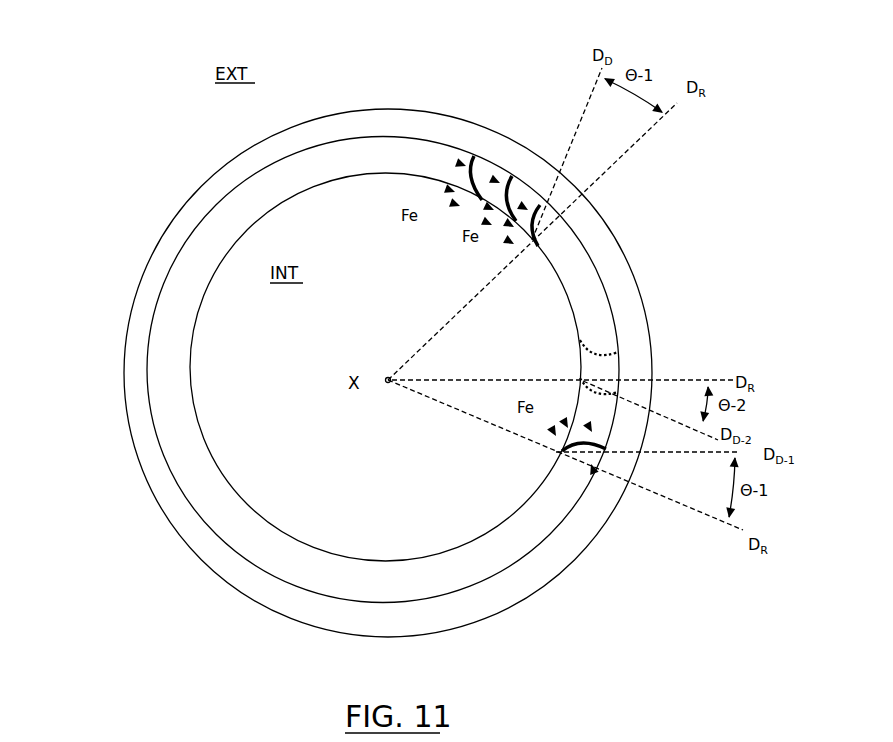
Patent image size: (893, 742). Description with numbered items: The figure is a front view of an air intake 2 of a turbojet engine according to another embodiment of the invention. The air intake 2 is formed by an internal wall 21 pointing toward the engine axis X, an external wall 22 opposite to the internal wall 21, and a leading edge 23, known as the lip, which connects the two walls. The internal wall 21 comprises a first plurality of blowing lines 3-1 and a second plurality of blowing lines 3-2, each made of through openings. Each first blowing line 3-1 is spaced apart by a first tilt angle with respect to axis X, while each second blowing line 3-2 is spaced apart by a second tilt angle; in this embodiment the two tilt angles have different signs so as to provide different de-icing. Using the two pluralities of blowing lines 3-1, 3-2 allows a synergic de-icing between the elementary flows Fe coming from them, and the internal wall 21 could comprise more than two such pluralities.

The air intake 2 is at (363, 373).
The internal wall 21 is at (193, 390).
The external wall 22 is at (128, 334).
The leading edge 23 is at (160, 292).
The first plurality of blowing lines 3-1 is at (438, 155).
The second plurality of blowing lines 3-2 is at (604, 338).